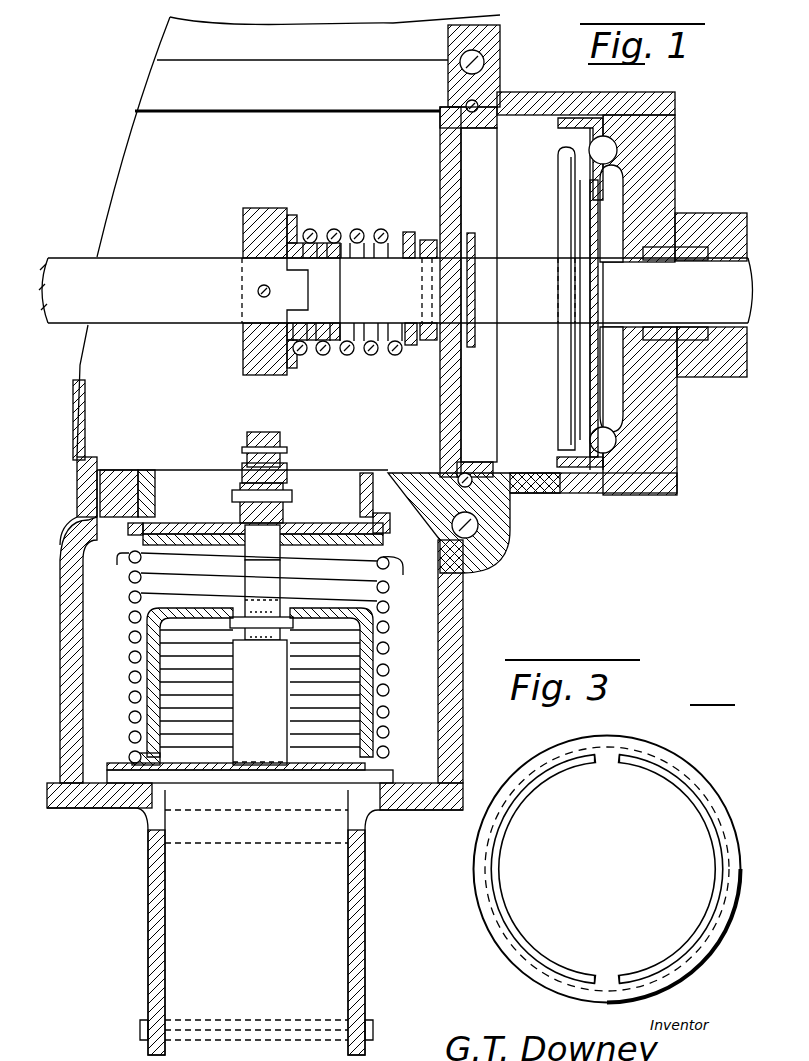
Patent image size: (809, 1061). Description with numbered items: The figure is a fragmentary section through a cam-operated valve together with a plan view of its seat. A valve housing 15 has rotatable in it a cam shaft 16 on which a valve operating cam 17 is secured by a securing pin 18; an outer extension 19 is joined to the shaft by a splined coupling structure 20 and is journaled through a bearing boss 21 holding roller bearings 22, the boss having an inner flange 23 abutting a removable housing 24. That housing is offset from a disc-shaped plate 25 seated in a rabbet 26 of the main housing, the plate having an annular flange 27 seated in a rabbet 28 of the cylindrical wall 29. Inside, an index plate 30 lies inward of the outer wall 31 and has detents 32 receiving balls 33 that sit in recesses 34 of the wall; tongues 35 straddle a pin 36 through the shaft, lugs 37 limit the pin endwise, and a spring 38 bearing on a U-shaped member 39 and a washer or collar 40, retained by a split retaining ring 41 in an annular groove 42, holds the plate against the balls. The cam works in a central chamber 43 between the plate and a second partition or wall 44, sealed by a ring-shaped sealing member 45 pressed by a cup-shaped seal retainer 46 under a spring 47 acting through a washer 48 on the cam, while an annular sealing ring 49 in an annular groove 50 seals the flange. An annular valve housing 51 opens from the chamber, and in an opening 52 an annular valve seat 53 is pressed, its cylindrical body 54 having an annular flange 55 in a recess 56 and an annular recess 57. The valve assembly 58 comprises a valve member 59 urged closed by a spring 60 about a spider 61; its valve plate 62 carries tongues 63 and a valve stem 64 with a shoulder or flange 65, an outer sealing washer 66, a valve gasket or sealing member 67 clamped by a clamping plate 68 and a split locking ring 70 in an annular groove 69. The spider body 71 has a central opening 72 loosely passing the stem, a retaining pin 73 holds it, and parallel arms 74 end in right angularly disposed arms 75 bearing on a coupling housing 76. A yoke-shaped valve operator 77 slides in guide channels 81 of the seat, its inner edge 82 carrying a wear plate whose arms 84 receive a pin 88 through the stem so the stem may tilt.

In FIG. 1, the valve housing 15 is at (476, 623).
In FIG. 1, the cam shaft 16 is at (192, 257).
In FIG. 1, the valve operating cam 17 is at (276, 208).
In FIG. 1, the securing pin 18 is at (258, 290).
In FIG. 1, the outer extension 19 is at (720, 263).
In FIG. 1, the splined coupling structure 20 is at (312, 285).
In FIG. 1, the bearing boss 21 is at (712, 370).
In FIG. 1, the roller bearings 22 is at (683, 322).
In FIG. 1, the inner flange 23 is at (673, 453).
In FIG. 1, the housing 24 is at (623, 504).
In FIG. 1, the disc-shaped plate 25 is at (437, 408).
In FIG. 1, the rabbet 26 is at (417, 473).
In FIG. 1, the annular flange 27 is at (470, 510).
In FIG. 1, the rabbet 28 is at (497, 517).
In FIG. 1, the cylindrical wall 29 is at (573, 500).
In FIG. 1, the index plate 30 is at (603, 383).
In FIG. 1, the outer wall 31 is at (630, 410).
In FIG. 1, the detents 32 is at (588, 148).
In FIG. 1, the balls 33 is at (598, 138).
In FIG. 1, the recesses 34 is at (617, 150).
In FIG. 1, the tongues 35 is at (593, 397).
In FIG. 1, the pin 36 is at (563, 208).
In FIG. 1, the lugs 37 is at (558, 450).
In FIG. 1, the spring 38 is at (527, 333).
In FIG. 1, the U-shaped member 39 is at (550, 260).
In FIG. 1, the washer or collar 40 is at (470, 262).
In FIG. 1, the split retaining ring 41 is at (468, 268).
In FIG. 1, the annular groove 42 is at (475, 278).
In FIG. 1, the central chamber 43 is at (366, 125).
In FIG. 1, the second partition or wall 44 is at (85, 402).
In FIG. 1, the ring-shaped sealing member 45 is at (405, 230).
In FIG. 1, the cup-shaped seal retainer 46 is at (397, 367).
In FIG. 1, the spring 47 is at (355, 228).
In FIG. 1, the washer 48 is at (293, 218).
In FIG. 1, the annular sealing ring 49 is at (496, 95).
In FIG. 1, the annular groove 50 is at (468, 474).
In FIG. 1, the annular valve housing 51 is at (463, 700).
In FIG. 1, the opening 52 is at (390, 487).
In FIG. 1, the annular valve seat 53 is at (147, 470).
In FIG. 3, the annular valve seat 53 is at (676, 746).
In FIG. 1, the cylindrical body 54 is at (172, 470).
In FIG. 1, the annular flange 55 is at (133, 463).
In FIG. 1, the recess 56 is at (458, 543).
In FIG. 1, the annular recess 57 is at (202, 517).
In FIG. 1, the valve assembly 58 is at (399, 709).
In FIG. 1, the valve member 59 is at (329, 511).
In FIG. 1, the spring 60 is at (135, 640).
In FIG. 1, the spider 61 is at (247, 783).
In FIG. 1, the valve plate 62 is at (345, 543).
In FIG. 1, the tongues 63 is at (123, 560).
In FIG. 1, the valve stem 64 is at (380, 600).
In FIG. 1, the shoulder or flange 65 is at (262, 600).
In FIG. 1, the outer sealing washer 66 is at (385, 577).
In FIG. 1, the valve gasket or sealing member 67 is at (173, 527).
In FIG. 1, the clamping plate 68 is at (300, 530).
In FIG. 1, the annular groove 69 is at (262, 542).
In FIG. 1, the split locking ring 70 is at (243, 520).
In FIG. 1, the inner plate or body 71 is at (292, 770).
In FIG. 1, the central opening 72 is at (292, 618).
In FIG. 1, the retaining pin 73 is at (237, 633).
In FIG. 1, the parallel arms 74 is at (327, 783).
In FIG. 1, the right angularly disposed arms 75 is at (397, 763).
In FIG. 1, the coupling housing 76 is at (405, 815).
In FIG. 1, the yoke-shaped valve operator 77 is at (287, 436).
In FIG. 3, the grooves or guide channels 81 is at (612, 760).
In FIG. 1, the inner edge 82 is at (265, 430).
In FIG. 1, the outwardly extending arms 84 is at (247, 432).
In FIG. 1, the pin 88 is at (307, 463).